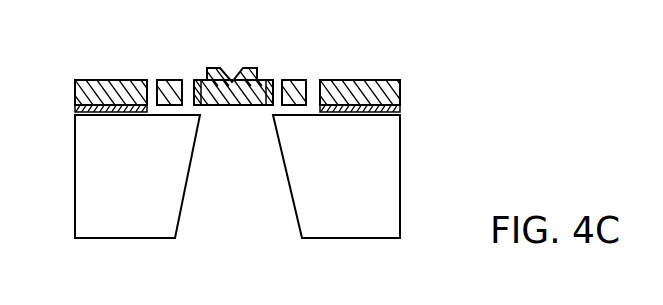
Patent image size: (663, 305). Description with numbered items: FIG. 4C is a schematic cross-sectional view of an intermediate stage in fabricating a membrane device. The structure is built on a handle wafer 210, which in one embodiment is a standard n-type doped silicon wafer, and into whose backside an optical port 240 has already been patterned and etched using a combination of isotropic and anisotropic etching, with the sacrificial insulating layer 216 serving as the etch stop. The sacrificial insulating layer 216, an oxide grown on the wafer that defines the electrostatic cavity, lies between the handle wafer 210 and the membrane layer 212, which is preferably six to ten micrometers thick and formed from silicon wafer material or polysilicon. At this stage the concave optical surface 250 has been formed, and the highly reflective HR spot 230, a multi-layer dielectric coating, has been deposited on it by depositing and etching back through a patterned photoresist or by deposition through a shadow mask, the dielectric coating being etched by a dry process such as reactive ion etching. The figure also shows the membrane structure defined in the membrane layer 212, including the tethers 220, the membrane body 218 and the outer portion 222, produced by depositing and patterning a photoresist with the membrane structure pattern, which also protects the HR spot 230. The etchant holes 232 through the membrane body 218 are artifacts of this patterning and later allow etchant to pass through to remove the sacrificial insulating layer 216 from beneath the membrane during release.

The handle wafer 210 is at (401, 228).
The membrane layer 212 is at (400, 91).
The sacrificial insulating layer 216 is at (401, 108).
The membrane body 218 is at (209, 105).
The tethers 220 is at (295, 80).
The outer portion 222 is at (108, 80).
The HR spot 230 is at (257, 74).
The etchant holes 232 is at (202, 80).
The optical port 240 is at (272, 232).
The optical surface 250 is at (233, 82).